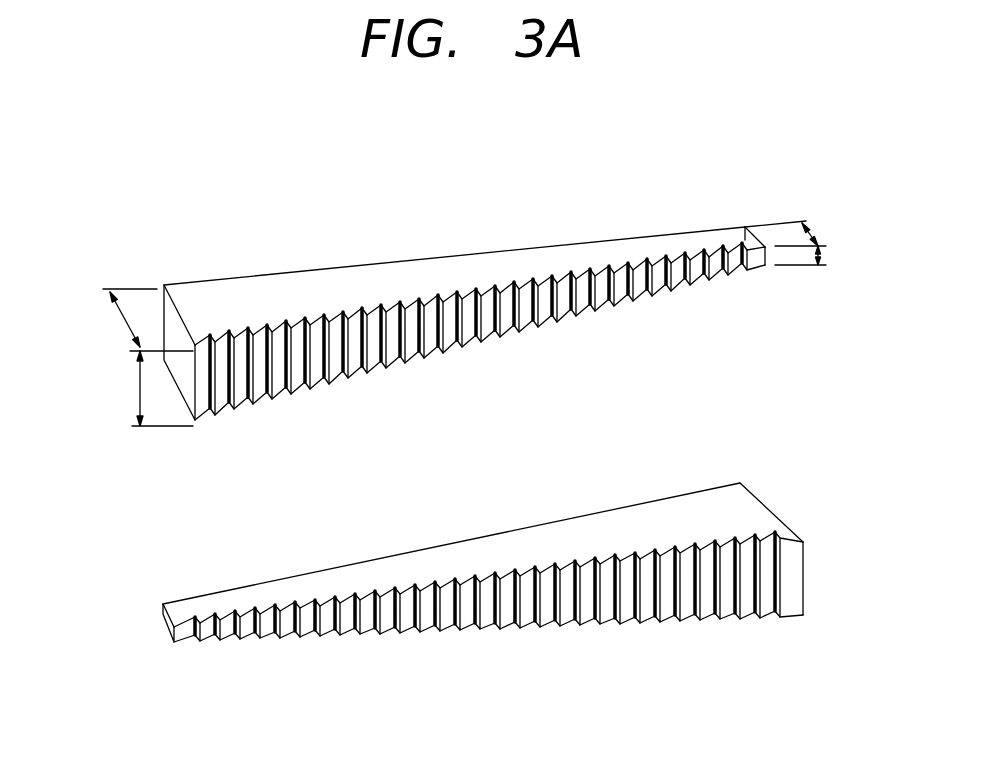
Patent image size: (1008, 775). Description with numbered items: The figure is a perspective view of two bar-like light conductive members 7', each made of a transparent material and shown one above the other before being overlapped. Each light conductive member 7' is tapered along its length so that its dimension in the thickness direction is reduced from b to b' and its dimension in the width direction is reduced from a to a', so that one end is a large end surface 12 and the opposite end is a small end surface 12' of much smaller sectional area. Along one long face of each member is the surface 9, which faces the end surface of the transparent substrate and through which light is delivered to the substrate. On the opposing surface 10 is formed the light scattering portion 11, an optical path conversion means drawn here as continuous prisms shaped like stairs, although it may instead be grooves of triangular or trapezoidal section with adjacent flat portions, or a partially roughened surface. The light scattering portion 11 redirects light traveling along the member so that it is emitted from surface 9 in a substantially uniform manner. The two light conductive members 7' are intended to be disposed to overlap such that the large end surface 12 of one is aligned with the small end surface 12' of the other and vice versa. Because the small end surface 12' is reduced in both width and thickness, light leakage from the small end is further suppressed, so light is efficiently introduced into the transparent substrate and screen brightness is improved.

The light conductive member 7' is at (460, 418).
The surface facing the end surface of the transparent substrate 9 is at (281, 272).
The surface opposing surface 9 10 is at (392, 345).
The light scattering portion 11 is at (522, 628).
The end surface (large end) 12 is at (482, 399).
The end surface (small end) 12' is at (435, 382).
The width dimension at the large end a is at (145, 320).
The thickness dimension at the large end b is at (152, 388).
The width dimension at the small end a' is at (824, 208).
The thickness dimension at the small end b' is at (849, 264).